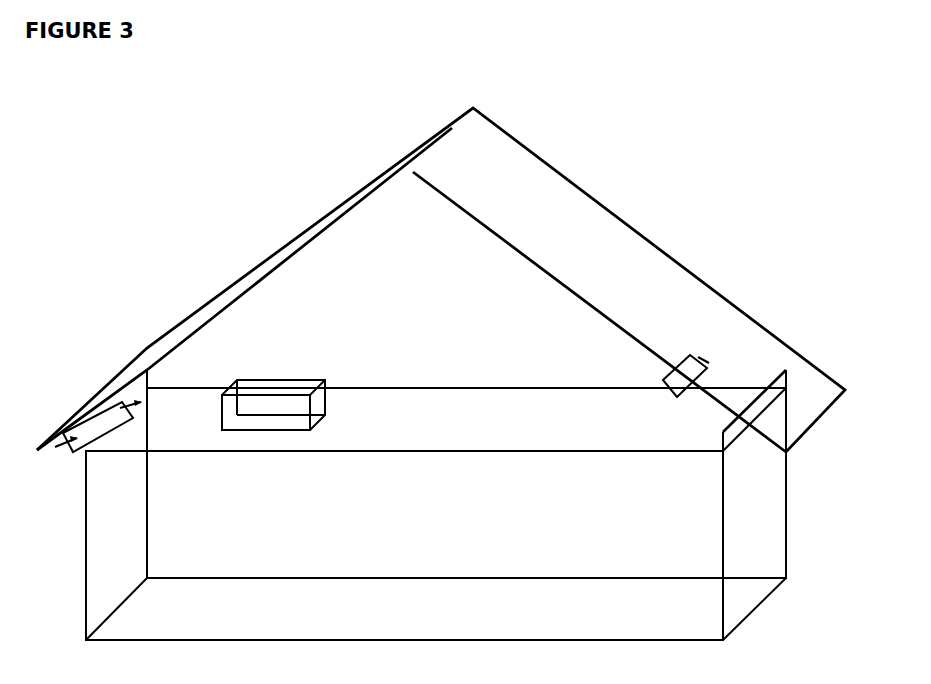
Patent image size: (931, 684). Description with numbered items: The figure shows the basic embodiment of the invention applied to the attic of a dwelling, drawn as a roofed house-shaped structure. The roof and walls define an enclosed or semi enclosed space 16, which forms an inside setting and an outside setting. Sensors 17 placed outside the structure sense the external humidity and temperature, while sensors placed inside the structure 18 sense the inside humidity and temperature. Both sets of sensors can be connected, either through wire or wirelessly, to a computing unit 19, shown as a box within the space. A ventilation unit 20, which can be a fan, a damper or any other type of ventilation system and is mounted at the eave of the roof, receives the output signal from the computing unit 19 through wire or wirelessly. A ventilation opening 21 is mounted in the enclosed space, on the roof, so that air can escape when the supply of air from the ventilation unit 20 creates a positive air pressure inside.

The enclosed or semi enclosed space 16 is at (360, 245).
The sensors placed outside the structure 17 is at (80, 463).
The sensors placed inside the structure 18 is at (250, 335).
The computing unit 19 is at (313, 400).
The ventilation unit 20 is at (97, 427).
The ventilation opening 21 is at (683, 358).